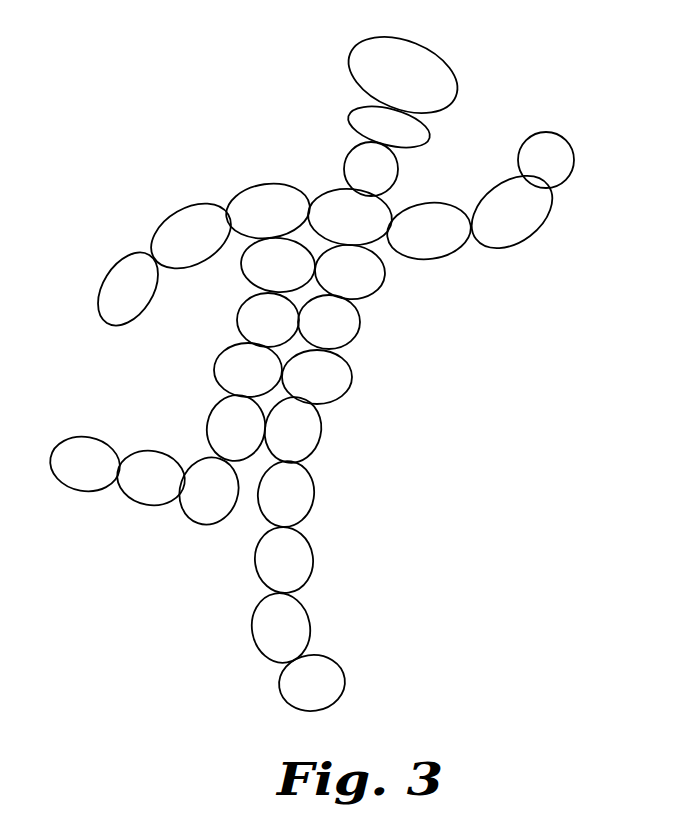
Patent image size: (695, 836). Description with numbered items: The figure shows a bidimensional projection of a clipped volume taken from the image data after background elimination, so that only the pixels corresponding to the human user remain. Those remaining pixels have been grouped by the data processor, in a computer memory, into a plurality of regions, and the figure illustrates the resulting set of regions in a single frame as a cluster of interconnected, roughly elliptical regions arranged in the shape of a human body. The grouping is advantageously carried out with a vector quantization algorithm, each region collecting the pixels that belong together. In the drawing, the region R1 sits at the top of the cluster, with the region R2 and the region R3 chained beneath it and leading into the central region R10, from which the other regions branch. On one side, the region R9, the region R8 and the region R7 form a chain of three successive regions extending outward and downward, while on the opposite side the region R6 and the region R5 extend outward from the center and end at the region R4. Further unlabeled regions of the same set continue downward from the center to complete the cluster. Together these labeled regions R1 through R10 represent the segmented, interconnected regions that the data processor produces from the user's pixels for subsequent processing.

The region R1 is at (427, 78).
The region R2 is at (413, 137).
The region R3 is at (362, 165).
The region R4 is at (555, 165).
The region R5 is at (512, 225).
The region R6 is at (433, 245).
The region R7 is at (128, 286).
The region R8 is at (180, 227).
The region R9 is at (263, 202).
The region R10 is at (372, 222).